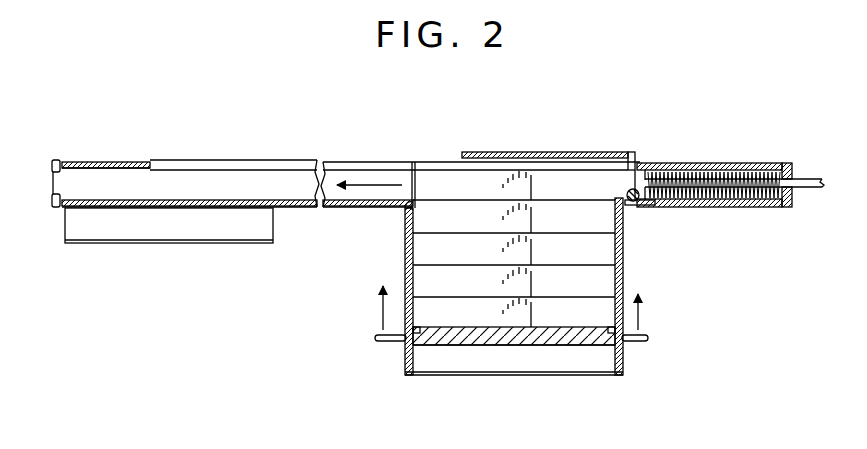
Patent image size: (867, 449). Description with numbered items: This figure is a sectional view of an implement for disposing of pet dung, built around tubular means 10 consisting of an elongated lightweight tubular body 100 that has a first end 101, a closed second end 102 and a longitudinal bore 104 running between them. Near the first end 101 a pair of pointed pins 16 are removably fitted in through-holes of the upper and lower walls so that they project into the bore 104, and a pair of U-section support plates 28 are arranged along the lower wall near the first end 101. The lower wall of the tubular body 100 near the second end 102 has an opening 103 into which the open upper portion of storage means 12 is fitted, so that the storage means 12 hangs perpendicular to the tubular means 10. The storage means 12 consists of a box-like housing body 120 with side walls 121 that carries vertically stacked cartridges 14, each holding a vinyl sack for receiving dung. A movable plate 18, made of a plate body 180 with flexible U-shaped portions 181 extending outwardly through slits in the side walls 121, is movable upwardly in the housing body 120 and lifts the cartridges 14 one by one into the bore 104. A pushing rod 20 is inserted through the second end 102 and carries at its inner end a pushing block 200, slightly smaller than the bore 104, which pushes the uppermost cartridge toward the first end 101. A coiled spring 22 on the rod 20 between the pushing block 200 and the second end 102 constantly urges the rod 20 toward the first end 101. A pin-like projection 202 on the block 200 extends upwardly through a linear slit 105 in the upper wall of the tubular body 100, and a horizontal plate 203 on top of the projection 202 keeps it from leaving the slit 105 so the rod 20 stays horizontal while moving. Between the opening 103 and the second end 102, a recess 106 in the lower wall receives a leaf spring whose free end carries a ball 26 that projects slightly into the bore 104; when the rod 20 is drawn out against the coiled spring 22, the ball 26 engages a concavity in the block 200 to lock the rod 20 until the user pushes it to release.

The tubular means 10 is at (152, 159).
The tubular body 100 is at (120, 162).
The first end 101 is at (75, 162).
The pins 16 is at (57, 160).
The support plates 28 is at (167, 232).
The longitudinal bore 104 is at (402, 182).
The storage means 12 is at (512, 379).
The opening 103 is at (404, 214).
The side walls 121 is at (410, 376).
The cartridges 14 is at (445, 182).
The movable plate 18 is at (537, 348).
The plate body 180 is at (587, 340).
The housing body 120 is at (463, 365).
The U-shaped portions 181 is at (392, 341).
The horizontal plate 203 is at (512, 157).
The pin-like projection 202 is at (630, 160).
The linear slit 105 is at (556, 165).
The pushing block 200 is at (631, 178).
The ball 26 is at (636, 191).
The recess 106 is at (645, 205).
The coiled spring 22 is at (727, 172).
The second end 102 is at (786, 165).
The pushing rod 20 is at (801, 191).